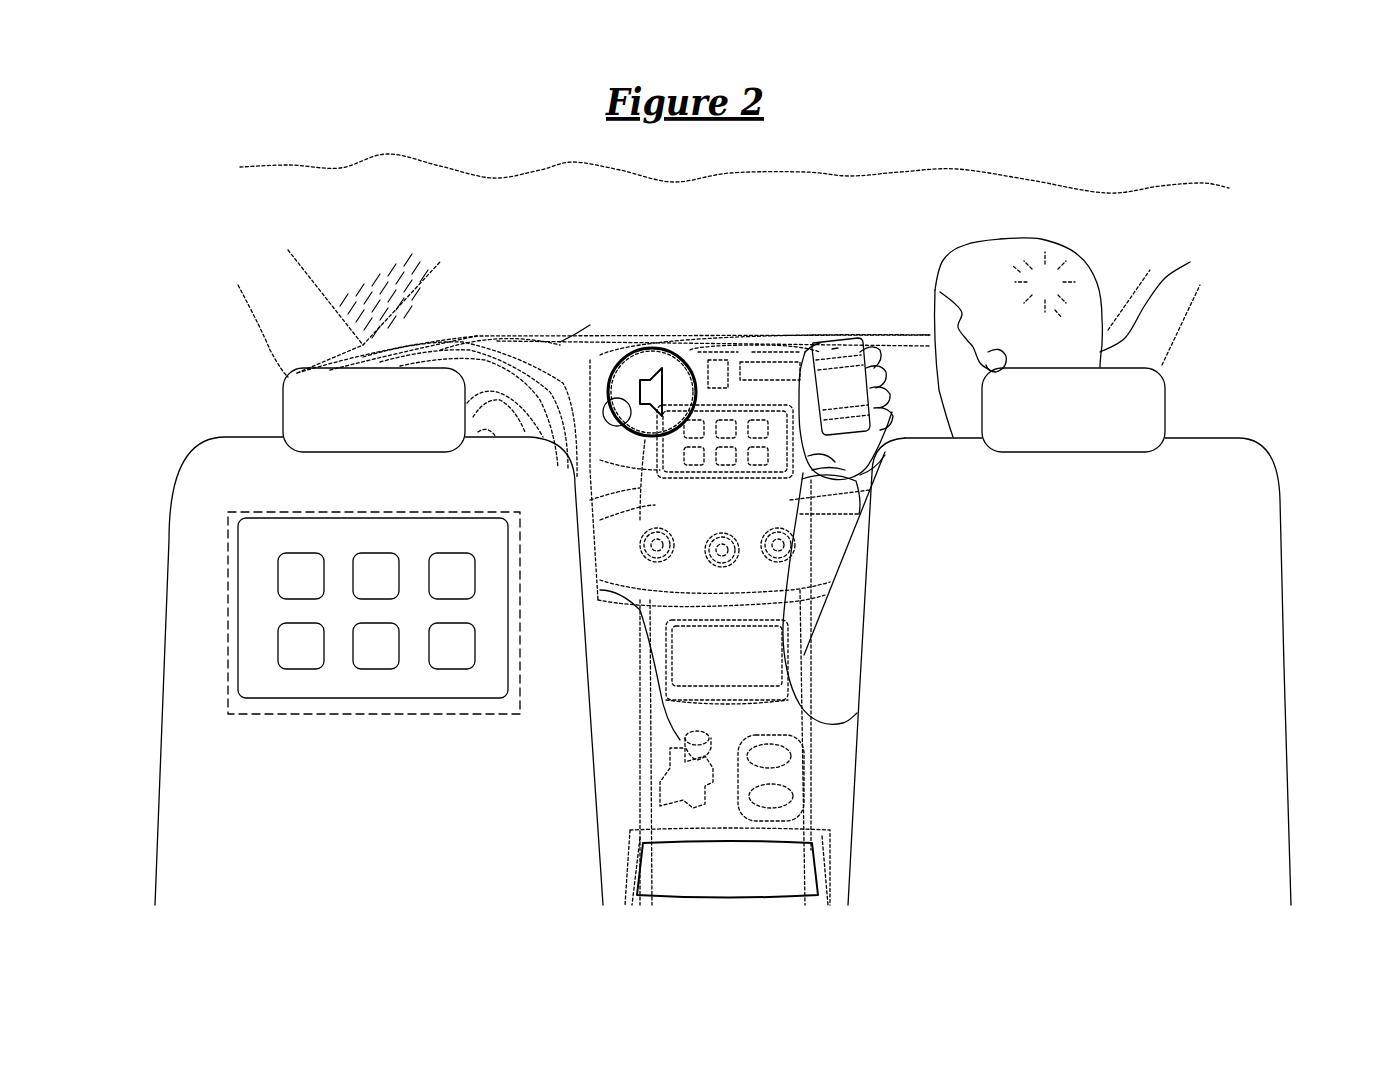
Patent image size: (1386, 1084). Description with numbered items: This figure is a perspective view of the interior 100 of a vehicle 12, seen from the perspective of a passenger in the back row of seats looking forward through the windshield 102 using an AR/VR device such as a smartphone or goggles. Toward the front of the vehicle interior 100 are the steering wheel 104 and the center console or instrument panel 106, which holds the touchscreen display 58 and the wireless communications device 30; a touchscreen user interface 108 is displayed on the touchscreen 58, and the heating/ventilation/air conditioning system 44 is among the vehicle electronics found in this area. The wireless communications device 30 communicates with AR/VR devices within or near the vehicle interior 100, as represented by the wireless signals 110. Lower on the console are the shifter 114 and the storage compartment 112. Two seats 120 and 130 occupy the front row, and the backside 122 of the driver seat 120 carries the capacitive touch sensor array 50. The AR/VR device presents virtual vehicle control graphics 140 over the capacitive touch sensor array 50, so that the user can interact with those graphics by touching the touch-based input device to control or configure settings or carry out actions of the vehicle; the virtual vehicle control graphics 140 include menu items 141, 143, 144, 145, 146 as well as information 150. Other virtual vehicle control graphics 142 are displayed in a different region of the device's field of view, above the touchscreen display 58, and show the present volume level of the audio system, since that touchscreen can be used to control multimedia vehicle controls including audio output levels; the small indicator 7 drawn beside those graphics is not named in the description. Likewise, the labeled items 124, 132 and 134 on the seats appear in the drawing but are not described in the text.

The vehicle 12 is at (1091, 105).
The vehicle interior 100 is at (1089, 137).
The windshield 102 is at (805, 172).
The steering wheel 104 is at (496, 362).
The center console or instrument panel 106 is at (582, 355).
The virtual vehicle control graphics 142 is at (628, 345).
The volume indicator 7 is at (617, 412).
The wireless communications device 30 is at (725, 474).
The touchscreen display 58 is at (756, 490).
The touchscreen user interface 108 is at (629, 482).
The heating/ventilation/air conditioning system 44 is at (637, 578).
The wireless signals 110 is at (833, 503).
The shifter 114 is at (690, 740).
The storage compartment 112 is at (820, 875).
The driver seat 120 is at (356, 636).
The backside of driver seat 122 is at (366, 483).
The passenger headrest 124 is at (374, 410).
The capacitive touch sensor array 50 is at (374, 639).
The virtual vehicle control graphics 140 is at (373, 635).
The menu item 141 is at (301, 576).
The menu item 143 is at (452, 576).
The menu item 144 is at (301, 646).
The menu item 145 is at (376, 646).
The menu item 146 is at (452, 646).
The seat 130 is at (1102, 636).
The driver seat back 132 is at (1076, 483).
The driver headrest 134 is at (1073, 410).
The information 150 is at (1083, 337).